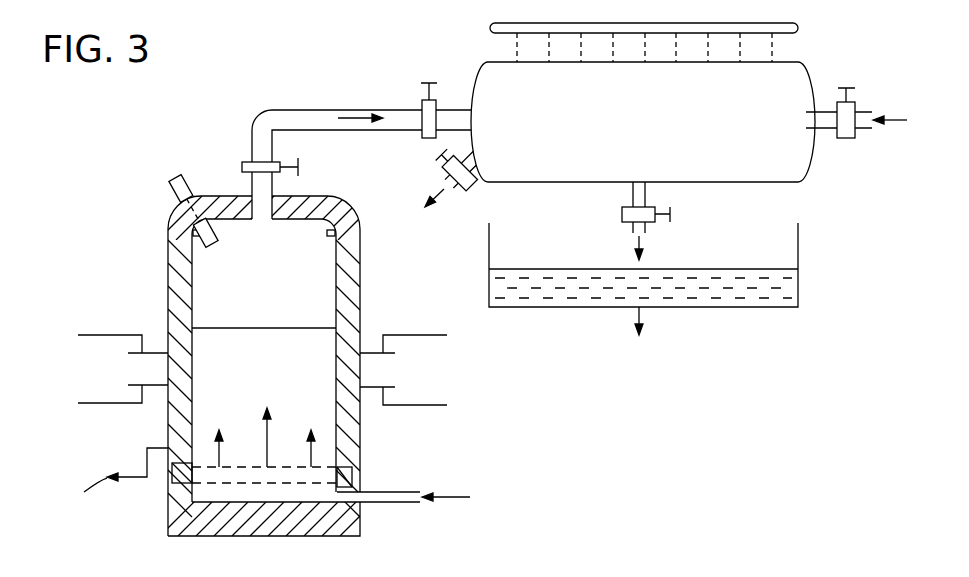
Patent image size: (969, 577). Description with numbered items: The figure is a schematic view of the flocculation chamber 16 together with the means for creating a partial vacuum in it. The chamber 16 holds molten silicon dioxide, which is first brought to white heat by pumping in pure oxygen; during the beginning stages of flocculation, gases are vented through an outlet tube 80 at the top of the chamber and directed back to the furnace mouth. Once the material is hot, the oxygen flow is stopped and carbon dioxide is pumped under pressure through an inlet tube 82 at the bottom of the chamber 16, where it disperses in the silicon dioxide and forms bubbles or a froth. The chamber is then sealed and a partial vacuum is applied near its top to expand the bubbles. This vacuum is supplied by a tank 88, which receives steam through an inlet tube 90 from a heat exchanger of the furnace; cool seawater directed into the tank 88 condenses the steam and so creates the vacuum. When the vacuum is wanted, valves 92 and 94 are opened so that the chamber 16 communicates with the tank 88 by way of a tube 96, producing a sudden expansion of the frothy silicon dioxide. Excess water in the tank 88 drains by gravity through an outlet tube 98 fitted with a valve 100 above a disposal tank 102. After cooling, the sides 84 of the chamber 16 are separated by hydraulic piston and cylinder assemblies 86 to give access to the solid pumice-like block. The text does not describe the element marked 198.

The flocculation chamber 16 is at (153, 270).
The outlet tube 80 is at (170, 183).
The inlet tube 82 is at (384, 505).
The sides 84 is at (168, 305).
The hydraulic piston and cylinder assemblies 86 is at (158, 386).
The tank 88 is at (800, 70).
The inlet tube 90 is at (822, 130).
The valve 92 is at (243, 163).
The valve 94 is at (436, 100).
The tube 96 is at (342, 108).
The outlet tube 98 is at (648, 195).
The valve 100 is at (622, 211).
The disposal tank 102 is at (798, 289).
The iron outlet tap 198 is at (170, 455).